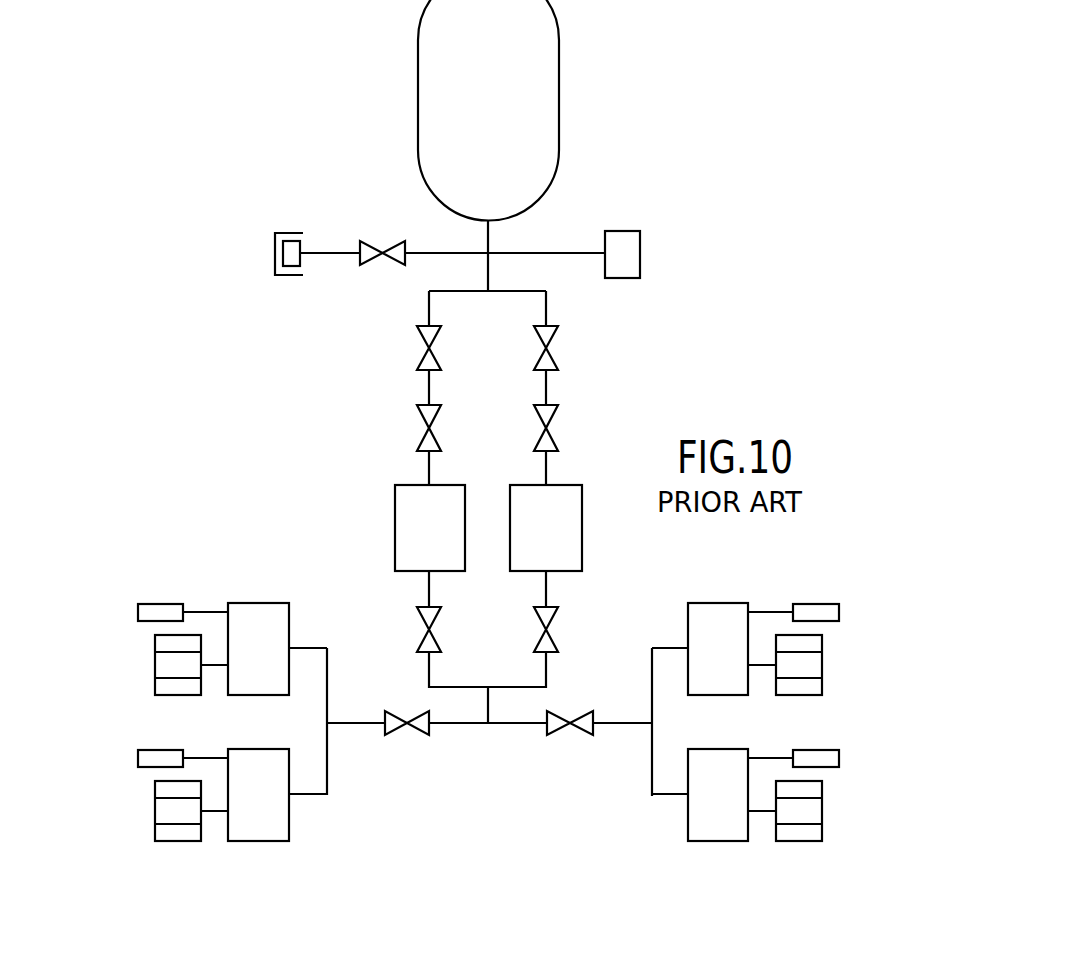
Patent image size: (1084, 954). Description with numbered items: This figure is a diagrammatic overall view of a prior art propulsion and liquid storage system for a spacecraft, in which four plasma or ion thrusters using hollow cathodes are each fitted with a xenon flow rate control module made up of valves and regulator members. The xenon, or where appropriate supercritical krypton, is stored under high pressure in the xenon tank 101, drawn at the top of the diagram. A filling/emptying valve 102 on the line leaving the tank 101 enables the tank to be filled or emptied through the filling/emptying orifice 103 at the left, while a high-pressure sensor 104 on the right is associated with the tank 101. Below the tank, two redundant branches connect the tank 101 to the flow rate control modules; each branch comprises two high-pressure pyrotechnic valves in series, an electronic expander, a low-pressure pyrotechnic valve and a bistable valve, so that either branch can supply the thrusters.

The xenon tank 101 is at (503, 105).
The filling/emptying valve 102 is at (378, 250).
The filling/emptying orifice 103 is at (276, 252).
The high-pressure sensor 104 is at (630, 258).